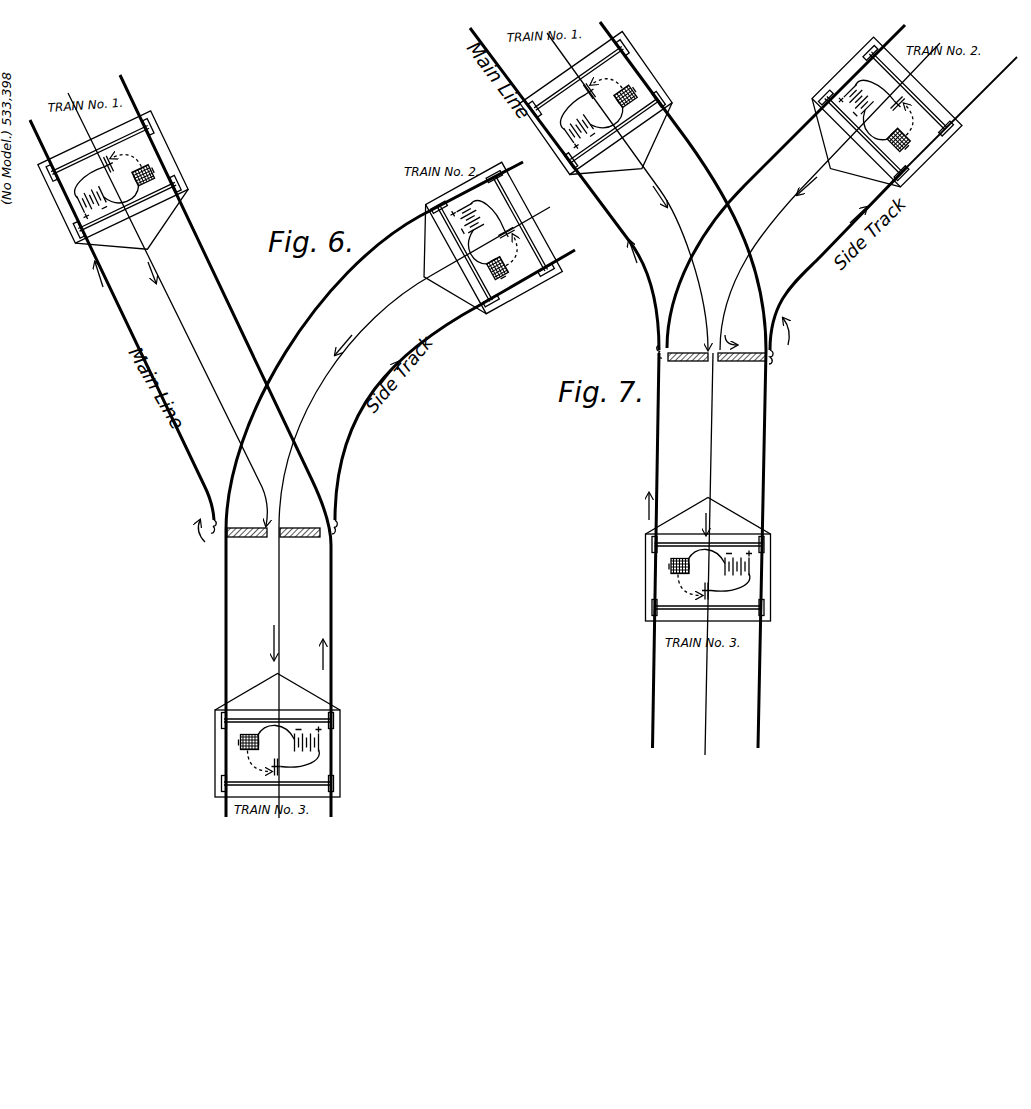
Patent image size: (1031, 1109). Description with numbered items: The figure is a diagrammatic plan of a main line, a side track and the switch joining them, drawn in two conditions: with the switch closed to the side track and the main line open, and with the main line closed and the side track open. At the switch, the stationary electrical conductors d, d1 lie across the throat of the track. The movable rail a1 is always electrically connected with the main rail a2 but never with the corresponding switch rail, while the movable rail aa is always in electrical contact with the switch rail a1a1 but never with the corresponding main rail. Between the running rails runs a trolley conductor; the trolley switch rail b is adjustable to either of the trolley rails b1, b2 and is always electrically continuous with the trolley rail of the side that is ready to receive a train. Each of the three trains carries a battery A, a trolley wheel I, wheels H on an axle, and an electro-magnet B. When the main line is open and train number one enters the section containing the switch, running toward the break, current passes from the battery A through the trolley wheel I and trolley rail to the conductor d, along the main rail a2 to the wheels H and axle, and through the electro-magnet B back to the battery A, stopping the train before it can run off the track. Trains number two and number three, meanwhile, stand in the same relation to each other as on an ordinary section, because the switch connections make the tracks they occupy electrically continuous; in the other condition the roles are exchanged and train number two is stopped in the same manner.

In FIG. 6, the battery A is at (80, 197).
In FIG. 7, the battery A is at (573, 140).
In FIG. 6, the electro-magnet B is at (157, 170).
In FIG. 7, the electro-magnet B is at (633, 92).
In FIG. 6, the wheels H is at (78, 229).
In FIG. 7, the wheels H is at (662, 105).
In FIG. 6, the trolley wheel I is at (112, 165).
In FIG. 7, the trolley wheel I is at (584, 88).
In FIG. 6, the movable rail a1 is at (226, 598).
In FIG. 7, the movable rail a1 is at (657, 450).
In FIG. 6, the main rail a2 is at (123, 331).
In FIG. 7, the main rail a2 is at (566, 193).
In FIG. 6, the movable rail aa is at (242, 446).
In FIG. 7, the movable rail aa is at (697, 385).
In FIG. 6, the switch rail a1a1 is at (337, 478).
In FIG. 7, the switch rail a1a1 is at (893, 210).
In FIG. 6, the trolley switch rail b is at (280, 600).
In FIG. 7, the trolley switch rail b is at (710, 410).
In FIG. 6, the trolley rail b1 is at (232, 422).
In FIG. 7, the trolley rail b1 is at (709, 315).
In FIG. 6, the trolley rail b2 is at (414, 367).
In FIG. 7, the trolley rail b2 is at (830, 196).
In FIG. 6, the stationary electrical conductor d is at (247, 544).
In FIG. 7, the stationary electrical conductor d is at (688, 370).
In FIG. 6, the stationary electrical conductor d1 is at (300, 544).
In FIG. 7, the stationary electrical conductor d1 is at (742, 370).